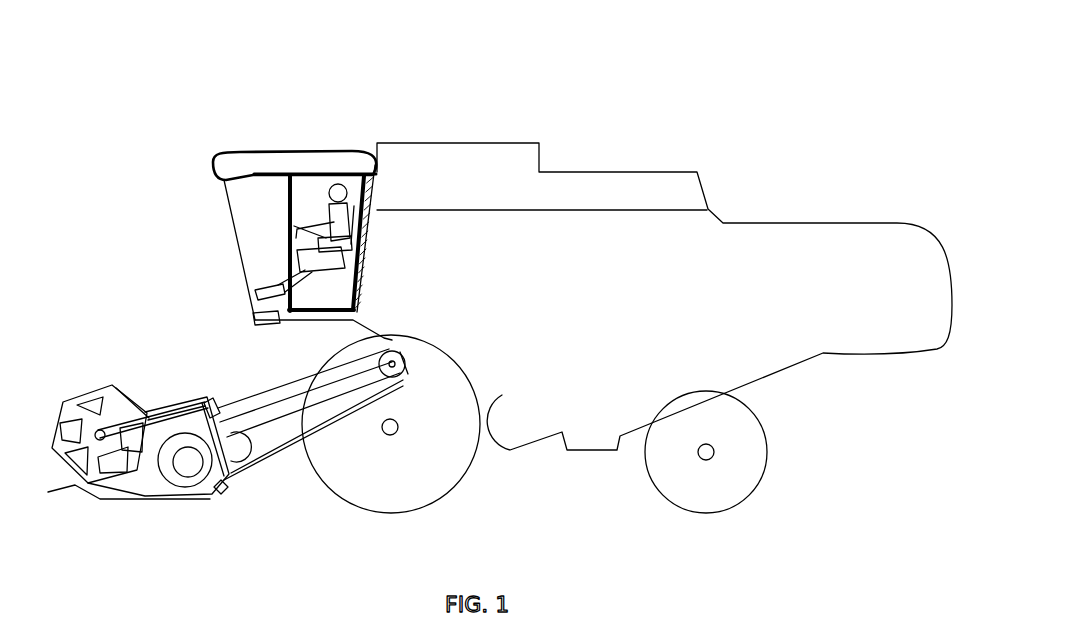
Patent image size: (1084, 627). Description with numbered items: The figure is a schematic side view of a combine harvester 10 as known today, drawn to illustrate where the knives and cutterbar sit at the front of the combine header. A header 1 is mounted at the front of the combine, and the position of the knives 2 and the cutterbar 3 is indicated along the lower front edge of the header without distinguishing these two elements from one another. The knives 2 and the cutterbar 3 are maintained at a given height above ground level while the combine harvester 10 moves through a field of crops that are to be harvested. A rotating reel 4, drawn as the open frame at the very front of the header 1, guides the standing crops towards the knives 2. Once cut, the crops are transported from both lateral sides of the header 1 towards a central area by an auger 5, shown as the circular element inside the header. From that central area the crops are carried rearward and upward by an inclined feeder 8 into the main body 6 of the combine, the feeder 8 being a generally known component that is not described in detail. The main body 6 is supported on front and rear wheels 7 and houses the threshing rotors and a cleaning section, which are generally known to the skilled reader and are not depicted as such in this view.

The combine harvester 10 is at (500, 285).
The header 1 is at (228, 431).
The knives 2 is at (138, 473).
The cutterbar 3 is at (138, 473).
The rotating reel 4 is at (93, 392).
The auger 5 is at (197, 468).
The main body 6 is at (609, 318).
The front and rear wheels 7 is at (657, 458).
The feeder 8 is at (268, 393).